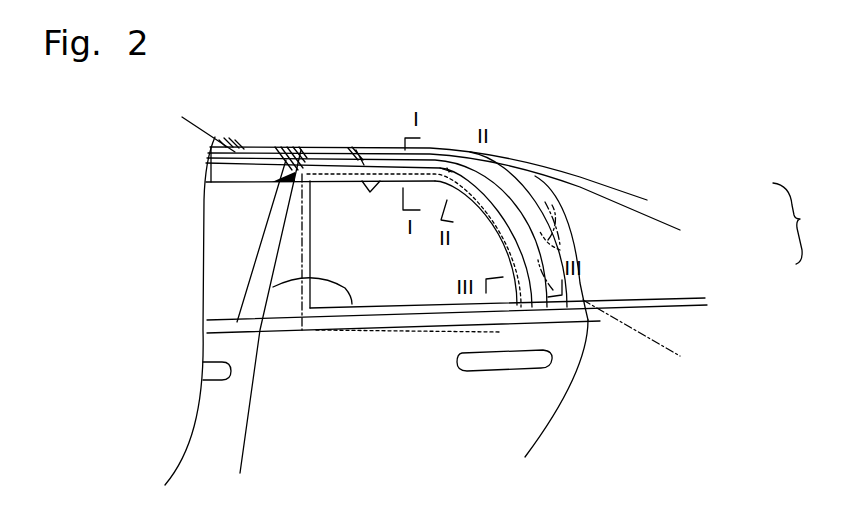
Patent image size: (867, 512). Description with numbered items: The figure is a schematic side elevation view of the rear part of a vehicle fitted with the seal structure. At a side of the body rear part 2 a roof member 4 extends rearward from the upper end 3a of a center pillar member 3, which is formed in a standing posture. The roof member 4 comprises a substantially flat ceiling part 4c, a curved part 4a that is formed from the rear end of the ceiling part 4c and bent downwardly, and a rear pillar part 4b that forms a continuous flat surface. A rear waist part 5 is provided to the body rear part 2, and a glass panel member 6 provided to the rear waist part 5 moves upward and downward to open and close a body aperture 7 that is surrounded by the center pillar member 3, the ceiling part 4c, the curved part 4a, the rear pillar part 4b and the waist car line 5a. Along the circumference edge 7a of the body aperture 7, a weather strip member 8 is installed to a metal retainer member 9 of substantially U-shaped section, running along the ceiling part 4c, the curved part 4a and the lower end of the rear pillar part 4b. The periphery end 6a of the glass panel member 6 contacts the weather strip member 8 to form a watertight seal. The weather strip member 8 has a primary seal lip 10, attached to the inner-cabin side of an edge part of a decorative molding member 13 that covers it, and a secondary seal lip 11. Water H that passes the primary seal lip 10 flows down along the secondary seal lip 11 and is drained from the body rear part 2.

The body rear part 2 is at (585, 170).
The center pillar member 3 is at (252, 262).
The upper end 3a is at (298, 147).
The roof member 4 is at (355, 152).
The curved part 4a is at (449, 170).
The rear pillar part 4b is at (560, 250).
The ceiling part 4c is at (338, 153).
The rear waist part 5 is at (287, 412).
The waist car line 5a is at (273, 287).
The glass panel member 6 is at (407, 335).
The periphery end 6a is at (505, 148).
The body aperture 7 is at (520, 176).
The circumference edge 7a is at (377, 177).
The weather strip member 8 is at (795, 223).
The retainer member 9 is at (545, 202).
The primary seal lip 10 is at (553, 290).
The secondary seal lip 11 is at (548, 240).
The molding member 13 is at (387, 165).
The water H is at (640, 336).